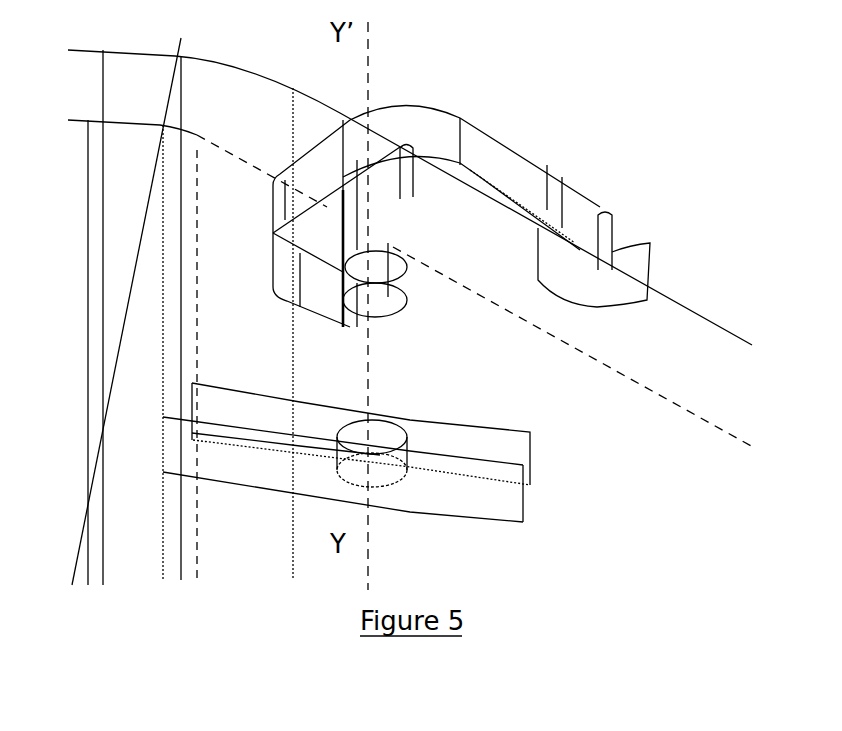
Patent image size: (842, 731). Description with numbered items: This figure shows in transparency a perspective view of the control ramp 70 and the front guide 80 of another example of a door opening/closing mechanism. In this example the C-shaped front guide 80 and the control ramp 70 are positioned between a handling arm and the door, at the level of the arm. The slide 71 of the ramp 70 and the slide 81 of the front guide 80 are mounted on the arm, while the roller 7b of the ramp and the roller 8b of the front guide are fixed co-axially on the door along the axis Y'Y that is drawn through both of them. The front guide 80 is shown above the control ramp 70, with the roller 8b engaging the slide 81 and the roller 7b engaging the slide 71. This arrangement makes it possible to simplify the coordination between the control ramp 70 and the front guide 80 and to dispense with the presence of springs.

The control ramp 70 is at (258, 512).
The slide 71 is at (307, 480).
The roller 7b is at (395, 467).
The front guide 80 is at (585, 153).
The slide 81 is at (493, 133).
The roller 8b is at (400, 280).